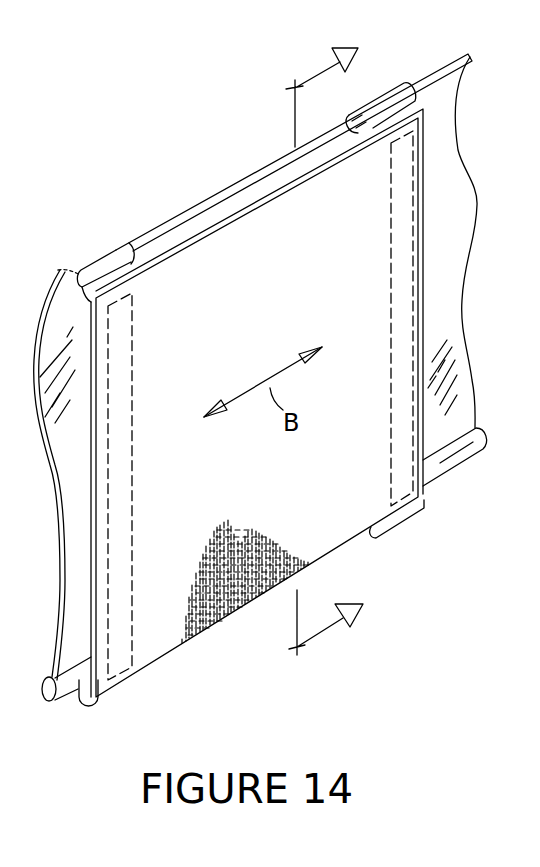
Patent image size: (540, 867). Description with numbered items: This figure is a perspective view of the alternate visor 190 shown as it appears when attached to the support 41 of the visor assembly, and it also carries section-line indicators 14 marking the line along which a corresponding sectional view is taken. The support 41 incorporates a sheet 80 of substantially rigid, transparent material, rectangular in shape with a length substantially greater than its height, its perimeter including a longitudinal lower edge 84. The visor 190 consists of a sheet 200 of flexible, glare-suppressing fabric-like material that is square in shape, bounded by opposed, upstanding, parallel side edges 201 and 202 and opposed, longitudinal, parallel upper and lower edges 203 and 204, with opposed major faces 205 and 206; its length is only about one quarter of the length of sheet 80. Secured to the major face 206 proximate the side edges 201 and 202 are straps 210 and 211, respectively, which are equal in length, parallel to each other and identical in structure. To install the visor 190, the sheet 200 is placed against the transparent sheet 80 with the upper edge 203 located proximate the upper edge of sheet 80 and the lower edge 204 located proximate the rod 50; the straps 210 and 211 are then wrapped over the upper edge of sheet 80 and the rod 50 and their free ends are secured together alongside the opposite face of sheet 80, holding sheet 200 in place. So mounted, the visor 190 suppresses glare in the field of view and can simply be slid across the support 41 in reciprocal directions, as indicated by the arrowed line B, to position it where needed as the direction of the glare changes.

The section line 14- 14 is at (321, 370).
The support 41 is at (463, 106).
The rod 50 is at (443, 463).
The sheet 80 is at (477, 178).
The lower edge 84 is at (476, 428).
The visor 190 is at (261, 218).
The sheet 200 is at (380, 292).
The side edge 201 is at (100, 552).
The side edge 202 is at (423, 372).
The upper edge 203 is at (203, 228).
The lower edge 204 is at (232, 610).
The major face 205 is at (242, 333).
The major face 206 is at (158, 260).
The strap 210 is at (98, 705).
The strap 211 is at (390, 524).